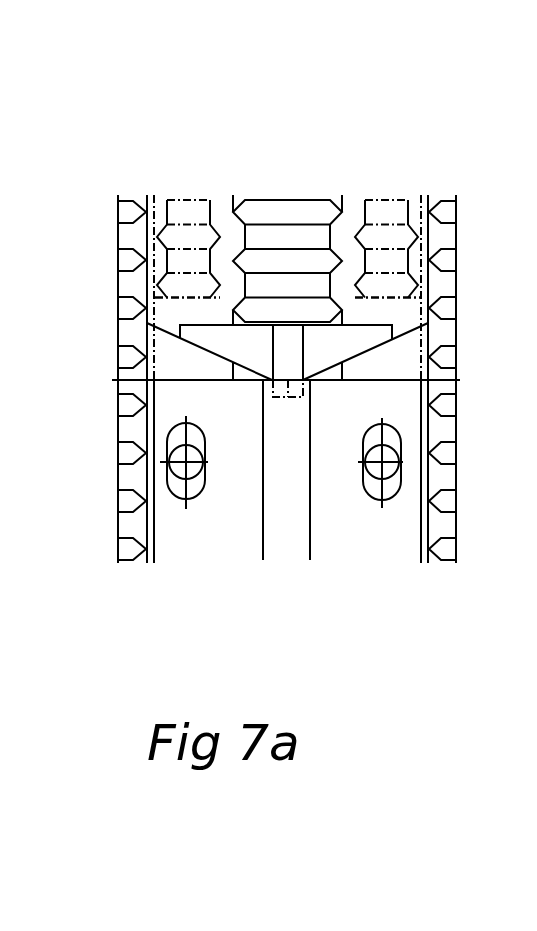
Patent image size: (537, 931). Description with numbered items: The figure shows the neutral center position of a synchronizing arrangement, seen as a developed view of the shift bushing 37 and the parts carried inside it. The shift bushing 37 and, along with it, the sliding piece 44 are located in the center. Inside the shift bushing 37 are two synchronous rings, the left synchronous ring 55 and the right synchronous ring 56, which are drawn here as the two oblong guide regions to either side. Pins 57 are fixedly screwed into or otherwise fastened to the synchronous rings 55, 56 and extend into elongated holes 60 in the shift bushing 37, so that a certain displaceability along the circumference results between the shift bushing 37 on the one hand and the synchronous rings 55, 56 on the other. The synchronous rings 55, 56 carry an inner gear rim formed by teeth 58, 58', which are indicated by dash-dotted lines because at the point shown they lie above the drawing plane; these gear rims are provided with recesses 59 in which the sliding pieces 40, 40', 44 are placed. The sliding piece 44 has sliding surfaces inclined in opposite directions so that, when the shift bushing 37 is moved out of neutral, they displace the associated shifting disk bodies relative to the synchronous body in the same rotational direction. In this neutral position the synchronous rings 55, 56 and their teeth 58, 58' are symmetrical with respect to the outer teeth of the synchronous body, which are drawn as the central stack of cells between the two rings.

The shift bushing 37 is at (260, 505).
The sliding piece 40 is at (407, 351).
The sliding piece 40' is at (172, 351).
The sliding piece 44 is at (287, 361).
The left synchronous ring 55 is at (177, 437).
The right synchronous ring 56 is at (390, 438).
The pin 57 is at (200, 468).
The teeth 58 is at (171, 202).
The teeth 58' is at (398, 200).
The recess 59 is at (172, 308).
The elongated hole 60 is at (180, 483).